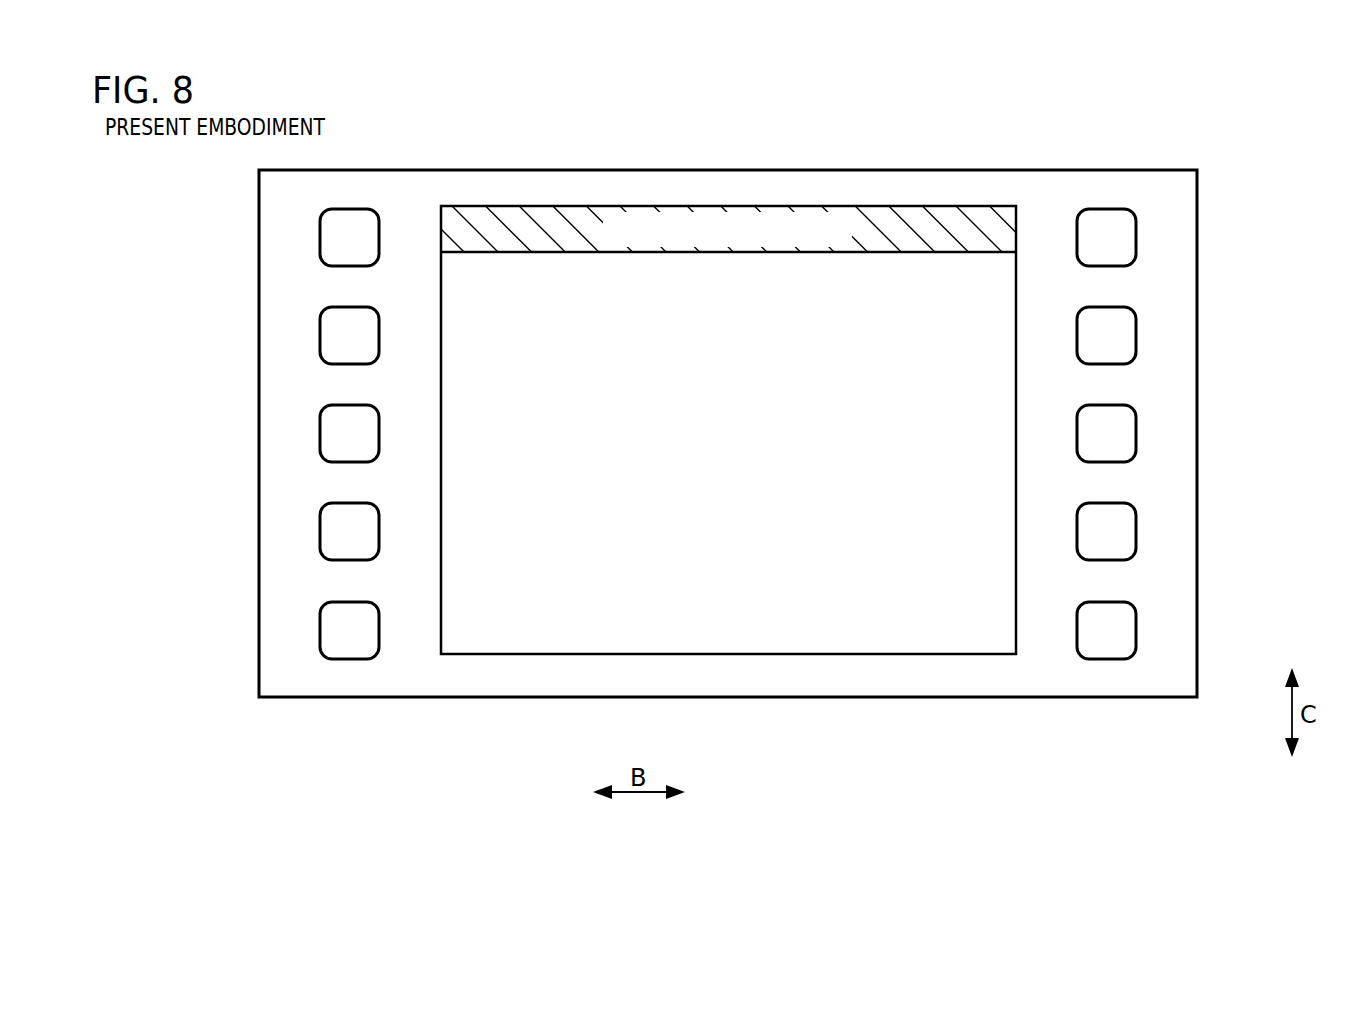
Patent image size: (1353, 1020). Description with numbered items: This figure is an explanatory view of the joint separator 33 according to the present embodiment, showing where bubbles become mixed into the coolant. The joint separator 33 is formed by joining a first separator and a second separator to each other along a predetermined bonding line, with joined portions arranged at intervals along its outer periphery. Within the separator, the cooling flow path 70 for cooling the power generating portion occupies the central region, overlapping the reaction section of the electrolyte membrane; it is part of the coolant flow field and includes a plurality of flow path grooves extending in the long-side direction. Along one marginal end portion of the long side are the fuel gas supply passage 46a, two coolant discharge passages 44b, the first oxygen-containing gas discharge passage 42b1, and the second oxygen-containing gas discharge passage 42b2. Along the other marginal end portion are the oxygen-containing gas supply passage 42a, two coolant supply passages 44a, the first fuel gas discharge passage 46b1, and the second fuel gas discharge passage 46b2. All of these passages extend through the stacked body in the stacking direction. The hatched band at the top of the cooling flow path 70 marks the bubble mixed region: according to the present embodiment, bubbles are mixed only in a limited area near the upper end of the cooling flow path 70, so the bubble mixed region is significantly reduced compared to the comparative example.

The joint separator 33 is at (1046, 168).
The cooling flow path 70 is at (867, 205).
The oxygen-containing gas supply passage 42a is at (326, 438).
The first oxygen-containing gas discharge passage 42b1 is at (1128, 240).
The second oxygen-containing gas discharge passage 42b2 is at (1128, 631).
The coolant supply passage 44a is at (326, 340).
The coolant discharge passage 44b is at (1128, 336).
The fuel gas supply passage 46a is at (1128, 434).
The first fuel gas discharge passage 46b1 is at (326, 243).
The second fuel gas discharge passage 46b2 is at (326, 635).